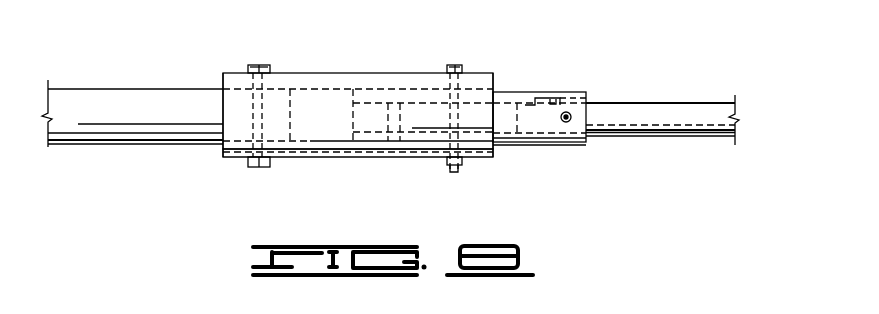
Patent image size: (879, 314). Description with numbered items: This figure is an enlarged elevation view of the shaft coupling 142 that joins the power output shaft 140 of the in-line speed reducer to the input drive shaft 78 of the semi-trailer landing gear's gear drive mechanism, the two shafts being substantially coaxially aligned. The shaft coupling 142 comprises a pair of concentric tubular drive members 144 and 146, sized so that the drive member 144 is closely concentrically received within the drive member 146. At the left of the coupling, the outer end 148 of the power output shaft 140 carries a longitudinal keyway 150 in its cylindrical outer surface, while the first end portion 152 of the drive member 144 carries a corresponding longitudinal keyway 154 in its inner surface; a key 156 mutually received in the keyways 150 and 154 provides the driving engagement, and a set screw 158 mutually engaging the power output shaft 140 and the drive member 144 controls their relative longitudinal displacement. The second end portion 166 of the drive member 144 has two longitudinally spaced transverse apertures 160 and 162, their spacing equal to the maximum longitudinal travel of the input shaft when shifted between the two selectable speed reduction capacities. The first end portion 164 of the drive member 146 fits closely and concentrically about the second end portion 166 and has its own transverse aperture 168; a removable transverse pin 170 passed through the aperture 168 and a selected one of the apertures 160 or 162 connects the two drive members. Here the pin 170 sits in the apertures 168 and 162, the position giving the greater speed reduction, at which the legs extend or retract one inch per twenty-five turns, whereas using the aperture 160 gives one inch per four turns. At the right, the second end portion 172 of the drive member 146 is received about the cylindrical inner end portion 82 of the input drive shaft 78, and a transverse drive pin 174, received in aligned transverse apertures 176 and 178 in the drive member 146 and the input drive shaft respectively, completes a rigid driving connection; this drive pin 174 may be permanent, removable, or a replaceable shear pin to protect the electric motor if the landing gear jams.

The input drive shaft 78 is at (67, 100).
The inner end portion 82 is at (126, 98).
The power output shaft 140 is at (666, 115).
The shaft coupling 142 is at (343, 73).
The tubular drive member 144 is at (503, 97).
The tubular drive member 146 is at (308, 80).
The outer end 148 is at (533, 134).
The longitudinal keyway 150 is at (532, 98).
The first end portion 152 is at (587, 92).
The longitudinal keyway 154 is at (553, 100).
The key 156 is at (563, 97).
The set screw 158 is at (567, 122).
The transverse aperture 160 is at (390, 100).
The transverse aperture 162 is at (455, 67).
The first end portion 164 is at (473, 80).
The second end portion 166 is at (372, 145).
The transverse aperture 168 is at (447, 159).
The transverse pin 170 is at (450, 72).
The second end portion 172 is at (228, 80).
The transverse drive pin 174 is at (257, 80).
The transverse aperture 176 is at (253, 67).
The transverse aperture 178 is at (243, 157).